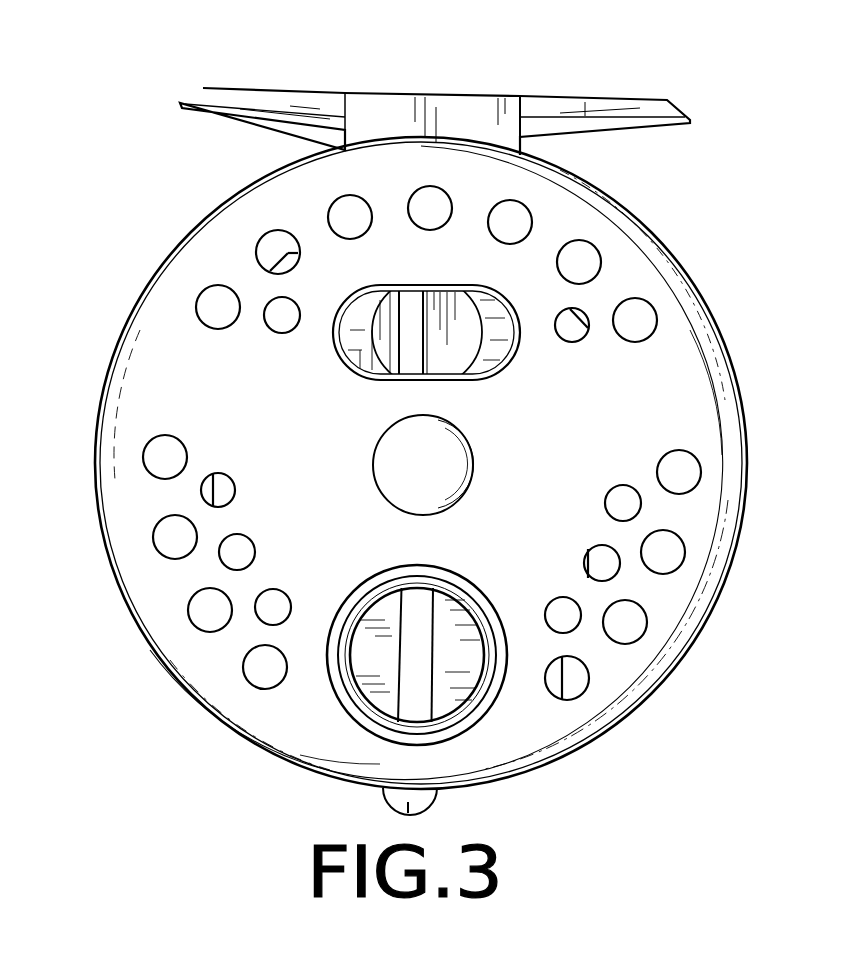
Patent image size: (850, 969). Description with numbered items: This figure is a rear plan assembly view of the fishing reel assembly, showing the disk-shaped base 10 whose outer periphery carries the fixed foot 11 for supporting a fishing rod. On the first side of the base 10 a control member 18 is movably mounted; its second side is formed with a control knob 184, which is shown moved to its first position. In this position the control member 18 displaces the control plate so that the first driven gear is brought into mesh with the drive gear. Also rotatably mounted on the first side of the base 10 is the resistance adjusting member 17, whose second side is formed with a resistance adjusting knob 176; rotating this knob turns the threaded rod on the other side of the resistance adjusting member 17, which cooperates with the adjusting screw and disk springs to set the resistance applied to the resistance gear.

The base 10 is at (733, 330).
The foot 11 is at (466, 110).
The resistance adjusting member 17 is at (372, 598).
The resistance adjusting knob 176 is at (420, 632).
The control member 18 is at (450, 352).
The control knob 184 is at (405, 362).